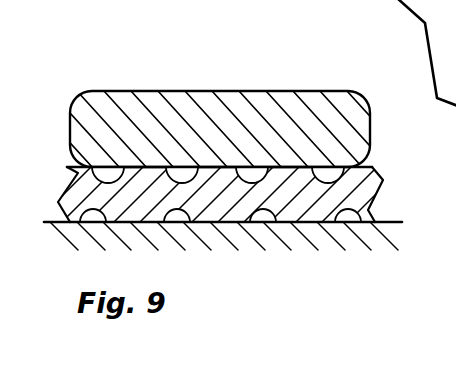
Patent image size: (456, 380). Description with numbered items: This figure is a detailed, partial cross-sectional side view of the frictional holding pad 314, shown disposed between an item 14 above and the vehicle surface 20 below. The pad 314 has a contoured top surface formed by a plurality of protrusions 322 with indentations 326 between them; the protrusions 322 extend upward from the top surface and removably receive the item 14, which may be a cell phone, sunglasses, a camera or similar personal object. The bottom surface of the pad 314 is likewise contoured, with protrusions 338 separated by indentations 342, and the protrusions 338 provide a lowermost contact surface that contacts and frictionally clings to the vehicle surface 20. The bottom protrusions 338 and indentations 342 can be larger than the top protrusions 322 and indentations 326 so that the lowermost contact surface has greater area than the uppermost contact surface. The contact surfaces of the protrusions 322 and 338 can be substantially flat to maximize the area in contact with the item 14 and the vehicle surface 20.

The item 14 is at (205, 90).
The vehicle surface 20 is at (222, 175).
The protrusions 322 is at (289, 178).
The indentations 326 is at (328, 173).
The protrusions 338 is at (302, 213).
The indentations 342 is at (347, 215).
The frictional holding pad 314 is at (405, 192).